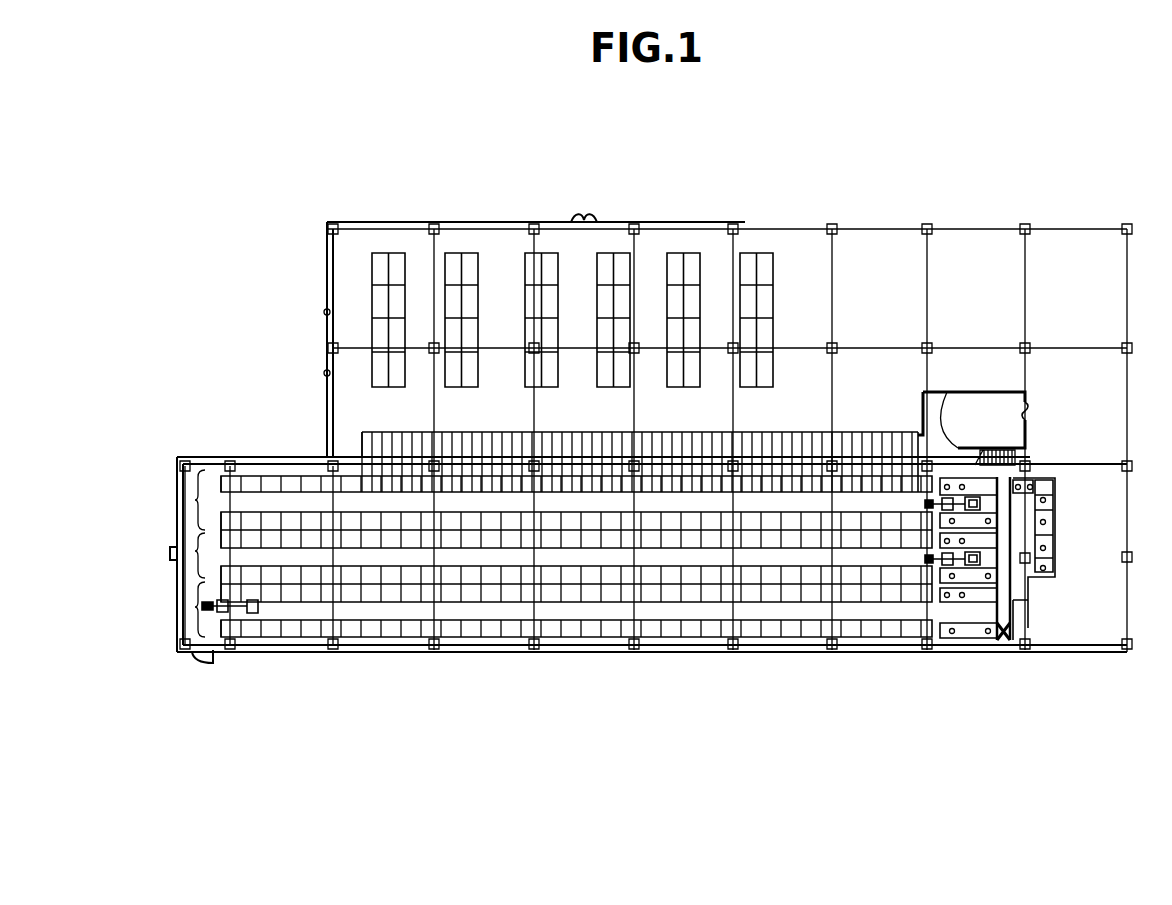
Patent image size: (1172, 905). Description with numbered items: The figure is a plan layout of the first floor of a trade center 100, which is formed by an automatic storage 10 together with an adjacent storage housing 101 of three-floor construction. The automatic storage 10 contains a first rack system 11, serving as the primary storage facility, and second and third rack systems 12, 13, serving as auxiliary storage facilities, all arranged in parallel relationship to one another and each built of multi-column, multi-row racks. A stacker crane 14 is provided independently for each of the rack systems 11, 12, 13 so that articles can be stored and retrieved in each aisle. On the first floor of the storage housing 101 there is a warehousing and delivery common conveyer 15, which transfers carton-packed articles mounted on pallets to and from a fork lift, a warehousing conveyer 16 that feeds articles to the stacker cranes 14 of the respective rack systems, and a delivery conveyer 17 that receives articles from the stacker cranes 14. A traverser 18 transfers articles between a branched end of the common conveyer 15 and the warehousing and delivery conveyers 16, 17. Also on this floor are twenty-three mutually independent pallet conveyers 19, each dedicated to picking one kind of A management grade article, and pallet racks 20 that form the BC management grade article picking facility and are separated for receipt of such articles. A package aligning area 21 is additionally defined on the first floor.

The automatic storage 10 is at (777, 638).
The No. 1 rack system 11 is at (195, 500).
The No. 2 rack system 12 is at (195, 550).
The No. 3 rack system 13 is at (195, 607).
The stacker crane 14 is at (255, 615).
The warehousing and delivery common conveyer 15 is at (1052, 560).
The warehousing conveyer 16 is at (992, 516).
The delivery conveyer 17 is at (997, 483).
The traverser 18 is at (1013, 634).
The pallet conveyer 19 is at (866, 440).
The pallet racks 20 is at (762, 253).
The package aligning area 21 is at (992, 322).
The trade center 100 is at (1080, 221).
The storage housing 101 is at (877, 252).